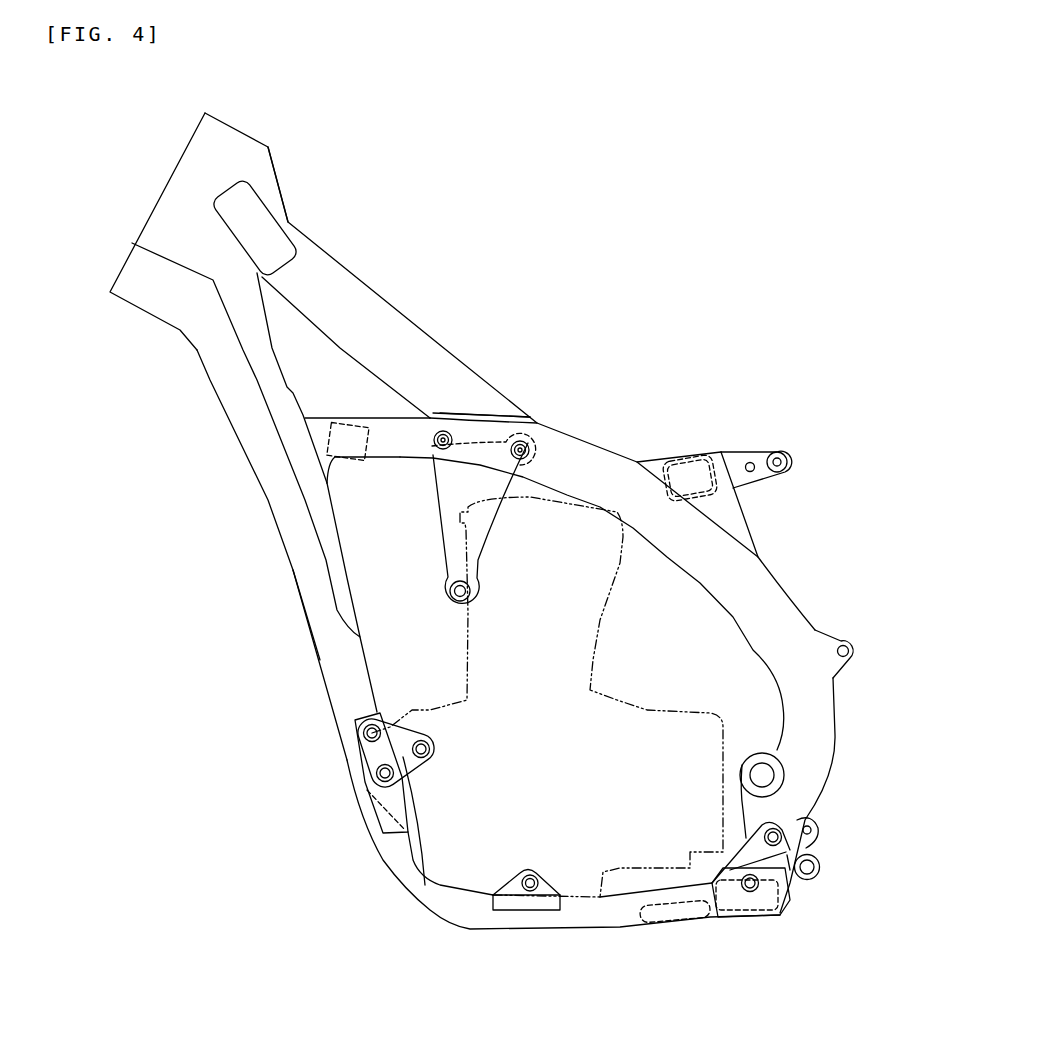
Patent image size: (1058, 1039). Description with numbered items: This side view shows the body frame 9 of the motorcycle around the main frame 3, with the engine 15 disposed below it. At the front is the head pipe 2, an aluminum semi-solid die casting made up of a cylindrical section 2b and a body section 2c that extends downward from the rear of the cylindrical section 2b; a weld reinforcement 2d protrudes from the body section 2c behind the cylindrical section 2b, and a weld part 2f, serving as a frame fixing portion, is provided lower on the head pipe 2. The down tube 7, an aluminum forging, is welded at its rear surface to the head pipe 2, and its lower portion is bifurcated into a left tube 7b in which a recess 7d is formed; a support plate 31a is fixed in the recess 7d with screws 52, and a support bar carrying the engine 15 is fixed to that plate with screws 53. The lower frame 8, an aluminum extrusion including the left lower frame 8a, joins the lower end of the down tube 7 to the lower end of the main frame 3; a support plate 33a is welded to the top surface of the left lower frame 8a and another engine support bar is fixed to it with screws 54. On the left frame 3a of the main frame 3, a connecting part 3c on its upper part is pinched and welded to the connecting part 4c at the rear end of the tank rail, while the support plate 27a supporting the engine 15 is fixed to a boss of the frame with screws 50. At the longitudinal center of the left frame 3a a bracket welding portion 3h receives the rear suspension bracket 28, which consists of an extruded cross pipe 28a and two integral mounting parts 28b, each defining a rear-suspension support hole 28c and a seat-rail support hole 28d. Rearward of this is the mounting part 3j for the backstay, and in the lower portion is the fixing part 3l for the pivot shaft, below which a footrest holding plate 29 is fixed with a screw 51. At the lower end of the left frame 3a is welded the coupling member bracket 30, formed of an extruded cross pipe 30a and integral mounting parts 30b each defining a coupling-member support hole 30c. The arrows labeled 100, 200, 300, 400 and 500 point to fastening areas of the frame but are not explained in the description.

The head pipe 2 is at (183, 198).
The cylindrical section 2b is at (205, 135).
The body section 2c is at (275, 400).
The weld reinforcement 2d is at (298, 247).
The weld part 2f is at (333, 465).
The main frame 3 is at (592, 614).
The left frame 3a is at (603, 460).
The connecting part 3c is at (513, 423).
The bracket welding portion 3h is at (738, 520).
The mounting part 3j is at (827, 640).
The fixing part 3l is at (784, 772).
The connecting part 4c is at (465, 410).
The down tube 7 is at (215, 365).
The left tube 7b is at (348, 693).
The recess 7d is at (365, 760).
The lower frame 8 is at (563, 878).
The left lower frame 8a is at (473, 910).
The body frame 9 is at (191, 659).
The engine 15 is at (597, 653).
The support plate 27a is at (452, 487).
The rear suspension bracket 28 is at (700, 447).
The cross pipe 28a is at (680, 452).
The mounting part 28b is at (732, 460).
The rear-suspension support hole 28c is at (752, 463).
The seat-rail support hole 28d is at (783, 452).
The footrest holding plate 29 is at (812, 828).
The coupling member bracket 30 is at (800, 885).
The cross pipe 30a is at (770, 920).
The mounting part 30b is at (813, 883).
The coupling-member support hole 30c is at (814, 866).
The support plate 31a is at (403, 835).
The support plate 33a is at (547, 890).
The screw 50 is at (447, 413).
The screw 51 is at (782, 838).
The screw 52 is at (363, 735).
The screw 53 is at (430, 740).
The screw 54 is at (530, 872).
The first fastening portion 100 is at (280, 593).
The second fastening portion 200 is at (513, 377).
The third fastening portion 300 is at (567, 417).
The fourth fastening portion 400 is at (440, 332).
The fifth fastening portion 500 is at (320, 732).